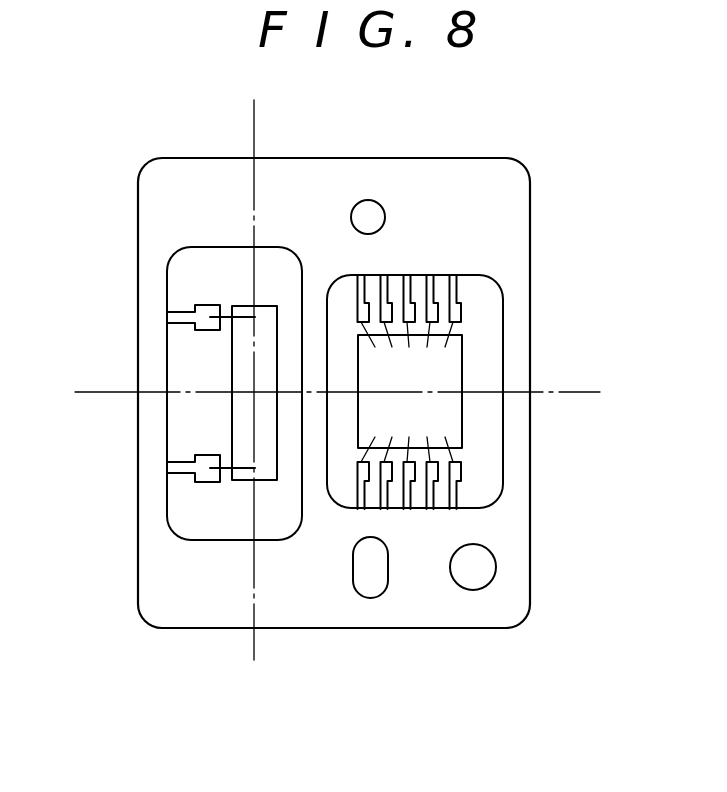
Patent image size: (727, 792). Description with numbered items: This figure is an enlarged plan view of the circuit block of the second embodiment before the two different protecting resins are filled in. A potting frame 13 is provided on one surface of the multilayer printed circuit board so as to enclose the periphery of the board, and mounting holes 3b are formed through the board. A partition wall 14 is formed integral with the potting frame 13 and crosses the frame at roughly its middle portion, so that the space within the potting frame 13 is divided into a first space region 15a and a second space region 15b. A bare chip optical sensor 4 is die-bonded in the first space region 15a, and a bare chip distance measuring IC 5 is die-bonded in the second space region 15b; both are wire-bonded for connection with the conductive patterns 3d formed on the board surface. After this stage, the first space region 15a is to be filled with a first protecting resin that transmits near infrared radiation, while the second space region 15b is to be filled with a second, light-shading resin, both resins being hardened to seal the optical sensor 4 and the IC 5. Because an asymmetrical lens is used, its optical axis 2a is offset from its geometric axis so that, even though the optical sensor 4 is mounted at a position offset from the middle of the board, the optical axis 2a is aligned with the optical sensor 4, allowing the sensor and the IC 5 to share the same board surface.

The potting frame 13 is at (305, 200).
The mounting holes 3b is at (367, 207).
The conductive patterns 3d is at (187, 322).
The partition wall 14 is at (318, 297).
The optical sensor 4 is at (238, 377).
The optical axis 2a is at (253, 393).
The distance measuring IC 5 is at (448, 360).
The first space region 15a is at (190, 514).
The second space region 15b is at (487, 463).